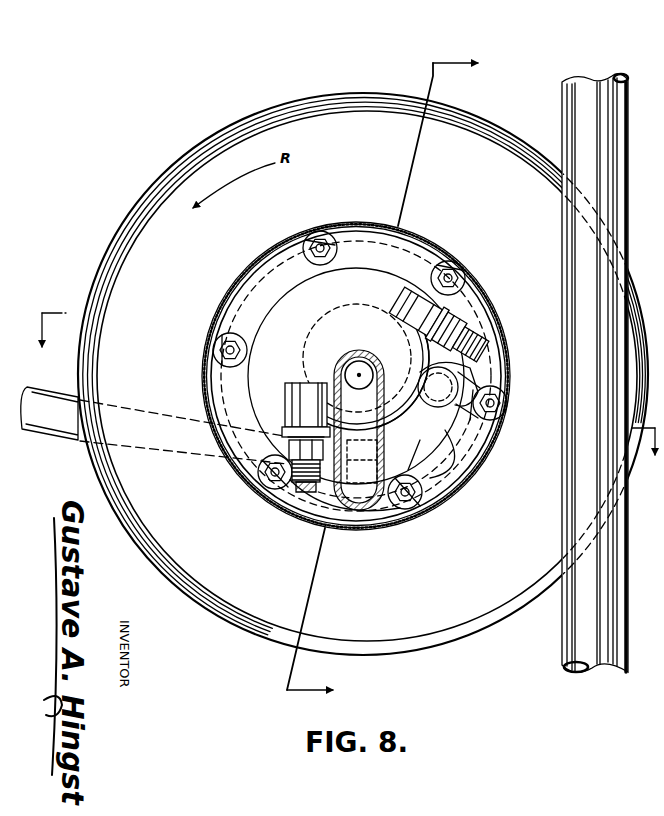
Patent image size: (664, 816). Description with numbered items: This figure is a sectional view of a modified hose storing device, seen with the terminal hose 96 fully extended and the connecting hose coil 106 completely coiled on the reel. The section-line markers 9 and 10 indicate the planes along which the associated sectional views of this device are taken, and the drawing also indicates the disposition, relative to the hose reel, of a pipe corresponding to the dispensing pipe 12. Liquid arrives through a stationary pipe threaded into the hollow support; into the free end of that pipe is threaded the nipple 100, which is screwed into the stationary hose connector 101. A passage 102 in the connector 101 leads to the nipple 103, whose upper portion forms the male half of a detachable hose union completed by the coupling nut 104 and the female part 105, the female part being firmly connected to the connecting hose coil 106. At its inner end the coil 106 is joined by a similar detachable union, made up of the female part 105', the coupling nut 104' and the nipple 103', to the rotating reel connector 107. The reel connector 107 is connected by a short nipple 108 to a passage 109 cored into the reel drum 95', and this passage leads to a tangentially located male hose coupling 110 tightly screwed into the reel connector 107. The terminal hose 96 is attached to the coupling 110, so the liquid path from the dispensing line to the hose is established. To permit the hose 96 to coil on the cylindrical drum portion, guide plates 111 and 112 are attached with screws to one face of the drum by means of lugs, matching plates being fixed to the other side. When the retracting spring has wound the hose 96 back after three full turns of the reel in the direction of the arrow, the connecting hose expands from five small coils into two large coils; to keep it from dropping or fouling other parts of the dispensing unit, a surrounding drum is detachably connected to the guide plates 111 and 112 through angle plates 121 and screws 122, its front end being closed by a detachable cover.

The section line 9- 9 is at (389, 382).
The section line 10- 10 is at (344, 399).
The dispensing pipe 12 is at (627, 600).
The terminal hose 96 is at (44, 435).
The nipple 100 is at (365, 358).
The stationary hose connector 101 is at (306, 508).
The passage 102 is at (359, 430).
The nipple 103 is at (289, 495).
The coupling nut 104 is at (260, 450).
The female part of hose union 105 is at (260, 416).
The nipple 103' is at (489, 319).
The coupling nut 104' is at (476, 304).
The female part of hose union 105' is at (412, 300).
The connecting hose coil 106 is at (436, 408).
The rotating reel connector 107 is at (496, 331).
The short nipple 108 is at (330, 334).
The passage 109 is at (452, 478).
The male hose coupling 110 is at (352, 502).
The guide plate 111 is at (292, 107).
The guide plate 112 is at (495, 138).
The angle plates 121 is at (247, 350).
The screws 122 is at (213, 348).
The reel drum 95' is at (356, 366).